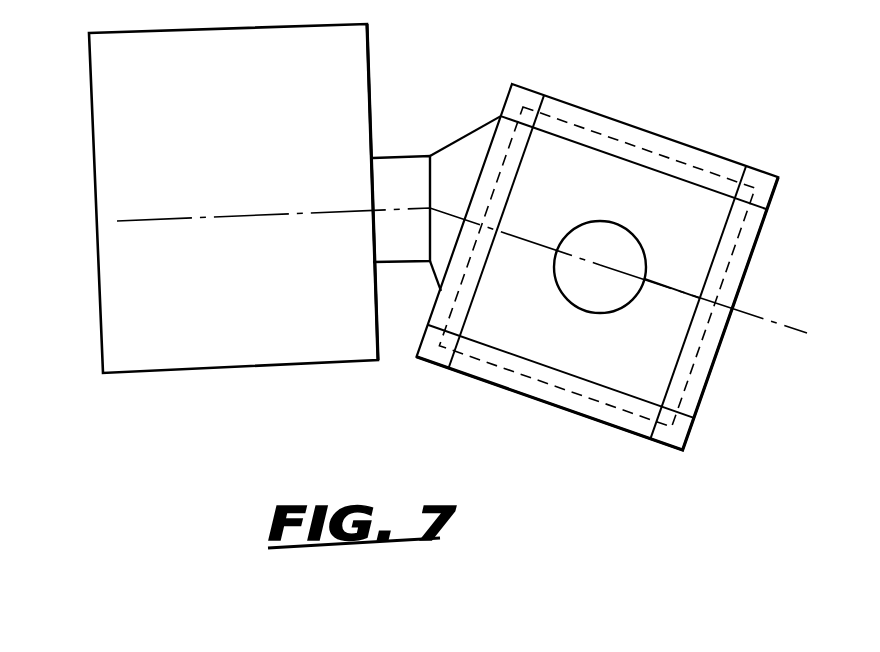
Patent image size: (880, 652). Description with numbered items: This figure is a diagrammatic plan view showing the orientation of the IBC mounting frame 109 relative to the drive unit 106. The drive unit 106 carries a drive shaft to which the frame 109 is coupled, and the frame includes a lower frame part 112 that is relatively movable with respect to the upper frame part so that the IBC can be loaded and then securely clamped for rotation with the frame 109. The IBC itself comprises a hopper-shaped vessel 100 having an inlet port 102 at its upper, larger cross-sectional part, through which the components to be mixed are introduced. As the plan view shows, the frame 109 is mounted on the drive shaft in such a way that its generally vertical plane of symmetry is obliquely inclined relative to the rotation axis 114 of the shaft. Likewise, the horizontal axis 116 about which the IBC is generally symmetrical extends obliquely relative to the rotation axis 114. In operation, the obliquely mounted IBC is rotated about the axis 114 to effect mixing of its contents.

The hopper-shaped vessel 100 is at (598, 278).
The inlet port 102 is at (643, 263).
The drive unit 106 is at (233, 198).
The IBC mounting frame 109 is at (649, 118).
The lower frame part 112 is at (578, 414).
The rotation axis 114 is at (270, 212).
The horizontal axis 116 is at (768, 323).